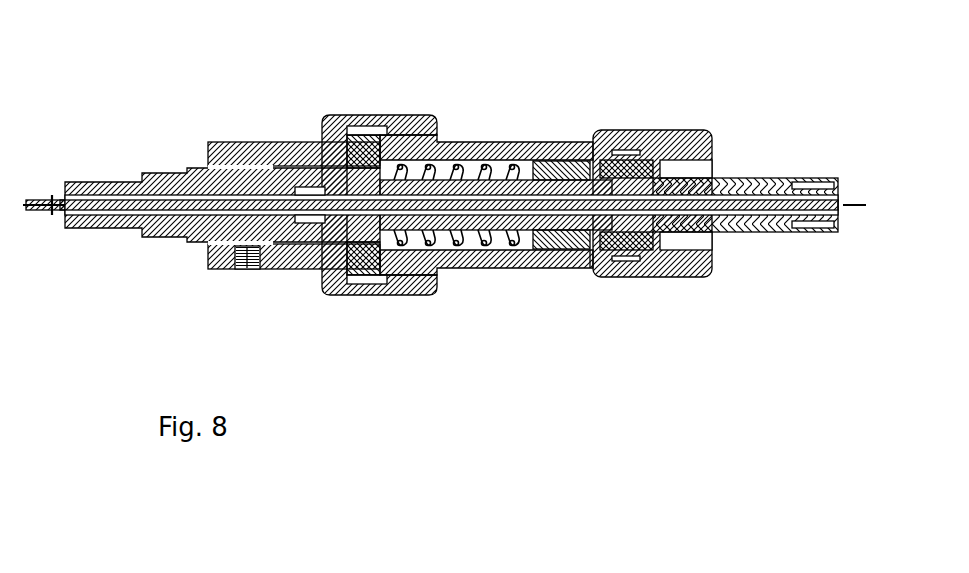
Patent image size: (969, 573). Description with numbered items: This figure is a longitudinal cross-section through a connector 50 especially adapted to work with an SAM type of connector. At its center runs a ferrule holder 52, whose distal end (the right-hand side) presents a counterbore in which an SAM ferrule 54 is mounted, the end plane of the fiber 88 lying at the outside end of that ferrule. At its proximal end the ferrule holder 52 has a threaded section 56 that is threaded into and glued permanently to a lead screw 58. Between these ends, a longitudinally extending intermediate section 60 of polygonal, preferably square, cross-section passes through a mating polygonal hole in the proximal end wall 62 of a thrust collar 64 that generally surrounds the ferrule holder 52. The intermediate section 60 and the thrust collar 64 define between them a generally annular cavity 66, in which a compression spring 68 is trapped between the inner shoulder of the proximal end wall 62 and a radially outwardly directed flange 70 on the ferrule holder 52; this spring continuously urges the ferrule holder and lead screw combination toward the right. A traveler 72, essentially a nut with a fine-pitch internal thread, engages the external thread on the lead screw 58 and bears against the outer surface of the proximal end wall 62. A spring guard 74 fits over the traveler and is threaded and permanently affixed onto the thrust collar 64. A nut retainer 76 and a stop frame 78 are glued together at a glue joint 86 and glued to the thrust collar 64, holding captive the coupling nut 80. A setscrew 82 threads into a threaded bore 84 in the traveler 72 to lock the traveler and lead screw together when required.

The connector 50 is at (591, 418).
The ferrule holder 52 is at (486, 142).
The SAM ferrule 54 is at (771, 178).
The threaded section 56 is at (345, 220).
The lead screw 58 is at (130, 180).
The intermediate section 60 is at (493, 236).
The proximal end wall 62 is at (377, 168).
The thrust collar 64 is at (522, 142).
The annular cavity 66 is at (451, 168).
The compression spring 68 is at (458, 268).
The flange 70 is at (530, 256).
The traveler 72 is at (298, 141).
The spring guard 74 is at (400, 118).
The nut retainer 76 is at (557, 250).
The stop frame 78 is at (633, 152).
The coupling nut 80 is at (686, 130).
The setscrew 82 is at (247, 268).
The threaded bore 84 is at (250, 270).
The glue joint 86 is at (588, 268).
The fiber 88 is at (820, 232).